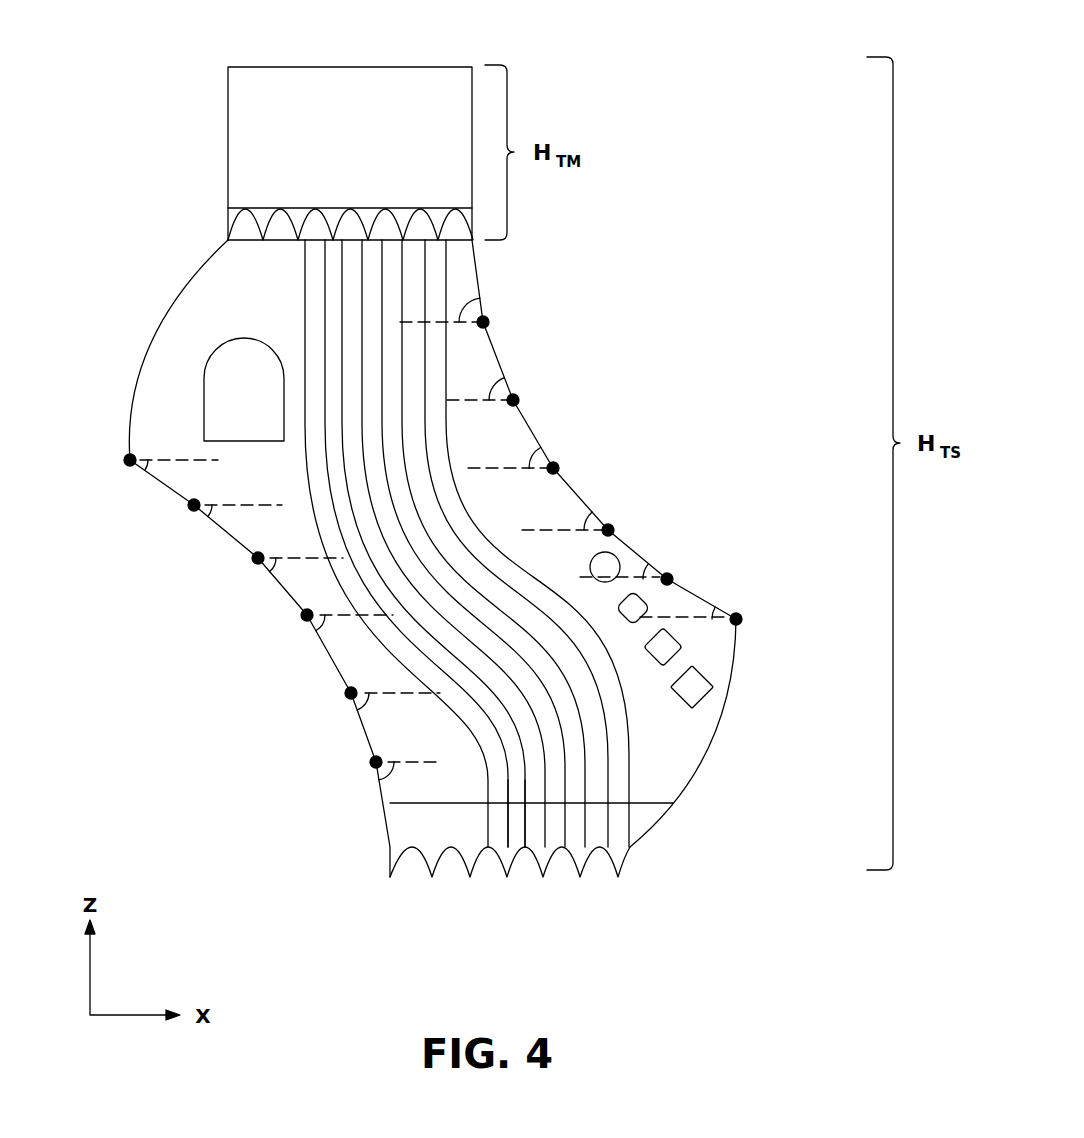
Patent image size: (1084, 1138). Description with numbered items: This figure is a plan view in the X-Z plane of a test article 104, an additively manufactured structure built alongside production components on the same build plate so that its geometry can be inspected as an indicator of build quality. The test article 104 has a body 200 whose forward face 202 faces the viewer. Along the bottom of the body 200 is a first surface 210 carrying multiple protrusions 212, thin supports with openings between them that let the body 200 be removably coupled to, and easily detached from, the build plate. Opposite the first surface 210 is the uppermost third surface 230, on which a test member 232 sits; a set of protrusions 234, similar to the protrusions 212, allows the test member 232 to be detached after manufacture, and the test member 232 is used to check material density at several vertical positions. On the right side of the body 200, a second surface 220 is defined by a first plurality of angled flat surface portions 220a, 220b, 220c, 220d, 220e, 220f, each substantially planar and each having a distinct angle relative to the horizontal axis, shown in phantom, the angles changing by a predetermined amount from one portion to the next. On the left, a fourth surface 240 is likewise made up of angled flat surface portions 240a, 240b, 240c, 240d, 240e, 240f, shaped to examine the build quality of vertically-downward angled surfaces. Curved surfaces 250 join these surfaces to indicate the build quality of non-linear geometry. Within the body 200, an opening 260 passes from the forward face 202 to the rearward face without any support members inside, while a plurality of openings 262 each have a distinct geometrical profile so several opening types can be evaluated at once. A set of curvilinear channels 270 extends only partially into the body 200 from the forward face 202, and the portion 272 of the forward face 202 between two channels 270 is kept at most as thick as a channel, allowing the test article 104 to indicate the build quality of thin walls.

The test article 104 is at (632, 172).
The body 200 is at (150, 410).
The forward face 202 is at (281, 321).
The first surface 210 is at (630, 885).
The protrusions 212 is at (432, 877).
The second surface 220 is at (717, 427).
The angled flat surface portion 220a is at (700, 600).
The angled flat surface portion 220b is at (640, 552).
The angled flat surface portion 220c is at (590, 505).
The angled flat surface portion 220d is at (530, 432).
The angled flat surface portion 220e is at (500, 365).
The angled flat surface portion 220f is at (480, 262).
The third surface 230 is at (217, 232).
The test member 232 is at (240, 75).
The protrusions 234 is at (330, 220).
The fourth surface 240 is at (172, 698).
The angled flat surface portion 240a is at (385, 817).
The angled flat surface portion 240b is at (363, 727).
The angled flat surface portion 240c is at (330, 656).
The angled flat surface portion 240d is at (282, 588).
The angled flat surface portion 240e is at (225, 533).
The angled flat surface portion 240f is at (160, 481).
The curved surfaces 250 is at (177, 303).
The opening 260 is at (228, 372).
The plurality of openings 262 is at (713, 710).
The curvilinear channels 270 is at (620, 773).
The portion 272 is at (517, 827).